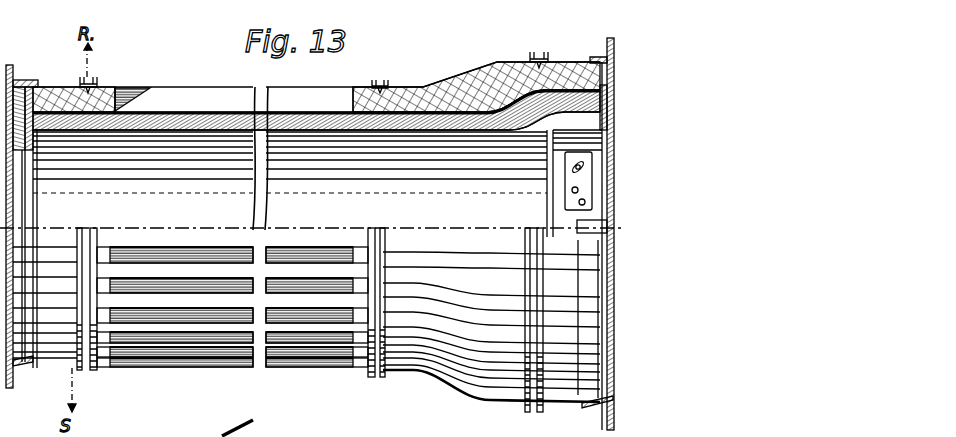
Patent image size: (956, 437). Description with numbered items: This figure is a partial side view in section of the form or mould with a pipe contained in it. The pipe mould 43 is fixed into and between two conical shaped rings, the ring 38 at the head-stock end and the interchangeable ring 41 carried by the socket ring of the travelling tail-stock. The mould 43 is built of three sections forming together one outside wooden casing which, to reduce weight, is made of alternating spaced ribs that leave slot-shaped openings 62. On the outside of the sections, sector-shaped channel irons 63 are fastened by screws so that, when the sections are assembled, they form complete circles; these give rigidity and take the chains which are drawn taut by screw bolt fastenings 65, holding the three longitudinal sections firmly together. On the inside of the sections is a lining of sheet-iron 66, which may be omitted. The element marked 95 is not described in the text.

The ring 38 is at (24, 80).
The interchangeable ring 41 is at (594, 409).
The pipe mould 43 is at (313, 234).
The slot-shaped opening 62 is at (322, 98).
The sector-shaped channel iron 63 is at (98, 86).
The screw bolt fastening 65 is at (473, 436).
The lining of sheet-iron 66 is at (168, 112).
The conductor 95 is at (215, 436).